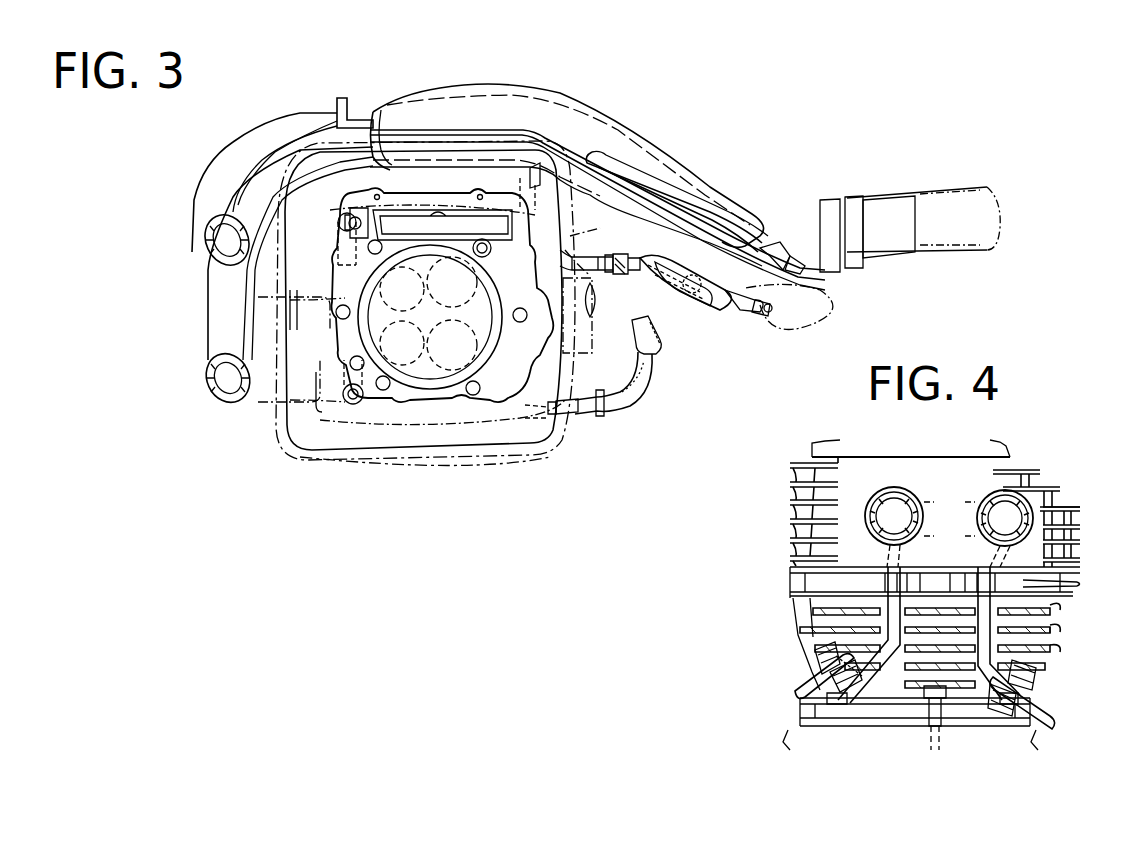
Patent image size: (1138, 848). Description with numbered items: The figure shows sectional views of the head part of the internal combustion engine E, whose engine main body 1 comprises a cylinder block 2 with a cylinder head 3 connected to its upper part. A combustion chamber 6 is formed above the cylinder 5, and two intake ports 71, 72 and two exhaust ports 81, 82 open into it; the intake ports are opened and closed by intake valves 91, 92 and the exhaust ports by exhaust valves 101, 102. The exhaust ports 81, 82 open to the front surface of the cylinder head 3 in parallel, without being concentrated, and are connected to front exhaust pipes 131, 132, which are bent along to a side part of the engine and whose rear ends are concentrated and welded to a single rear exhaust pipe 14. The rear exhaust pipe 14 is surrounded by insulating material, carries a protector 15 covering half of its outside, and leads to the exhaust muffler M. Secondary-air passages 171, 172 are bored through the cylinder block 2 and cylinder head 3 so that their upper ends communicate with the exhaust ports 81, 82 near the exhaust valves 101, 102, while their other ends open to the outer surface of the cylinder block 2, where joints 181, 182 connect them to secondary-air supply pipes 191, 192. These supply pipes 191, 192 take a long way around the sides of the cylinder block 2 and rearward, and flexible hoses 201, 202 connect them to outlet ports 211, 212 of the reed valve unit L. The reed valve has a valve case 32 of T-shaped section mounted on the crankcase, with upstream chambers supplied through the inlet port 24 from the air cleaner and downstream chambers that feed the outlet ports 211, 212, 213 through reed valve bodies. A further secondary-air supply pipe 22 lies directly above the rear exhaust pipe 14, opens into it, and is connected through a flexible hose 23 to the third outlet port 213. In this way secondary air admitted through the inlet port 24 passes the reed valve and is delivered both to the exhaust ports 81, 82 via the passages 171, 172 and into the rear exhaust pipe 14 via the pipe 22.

In FIG. 3, the engine main body 1 is at (466, 462).
In FIG. 4, the engine main body 1 is at (779, 543).
In FIG. 3, the cylinder block 2 is at (348, 442).
In FIG. 4, the cylinder block 2 is at (1033, 618).
In FIG. 4, the cylinder head 3 is at (1060, 517).
In FIG. 3, the cylinder 5 is at (443, 308).
In FIG. 3, the combustion chamber 6 is at (438, 325).
In FIG. 3, the rear exhaust pipe 14 is at (456, 130).
In FIG. 3, the protector 15 is at (552, 88).
In FIG. 3, the secondary-air supply pipe 22 is at (640, 180).
In FIG. 3, the flexible hose 23 is at (790, 248).
In FIG. 3, the inlet port 24 is at (694, 272).
In FIG. 3, the valve case 32 is at (668, 258).
In FIG. 3, the intake port 71 is at (482, 386).
In FIG. 3, the intake port 72 is at (494, 250).
In FIG. 3, the exhaust port 81 is at (322, 410).
In FIG. 4, the exhaust port 81 is at (990, 500).
In FIG. 3, the exhaust port 82 is at (303, 288).
In FIG. 4, the exhaust port 82 is at (893, 500).
In FIG. 3, the intake valve 91 is at (442, 356).
In FIG. 3, the intake valve 92 is at (470, 284).
In FIG. 3, the exhaust valve 101 is at (394, 336).
In FIG. 3, the exhaust valve 102 is at (420, 272).
In FIG. 3, the front exhaust pipe 131 is at (246, 398).
In FIG. 3, the front exhaust pipe 132 is at (205, 242).
In FIG. 3, the secondary-air passage 171 is at (364, 400).
In FIG. 4, the secondary-air passage 171 is at (990, 700).
In FIG. 3, the secondary-air passage 172 is at (340, 222).
In FIG. 4, the secondary-air passage 172 is at (880, 700).
In FIG. 4, the joint 181 is at (1005, 706).
In FIG. 4, the joint 182 is at (834, 706).
In FIG. 3, the secondary-air supply pipe 191 is at (566, 420).
In FIG. 4, the secondary-air supply pipe 191 is at (1066, 692).
In FIG. 3, the secondary-air supply pipe 192 is at (524, 178).
In FIG. 4, the secondary-air supply pipe 192 is at (806, 690).
In FIG. 3, the flexible hose 201 is at (641, 386).
In FIG. 3, the flexible hose 202 is at (600, 254).
In FIG. 3, the outlet port 211 is at (630, 258).
In FIG. 3, the outlet port 212 is at (660, 352).
In FIG. 3, the outlet port 213 is at (762, 306).
In FIG. 3, the exhaust muffler M is at (946, 192).